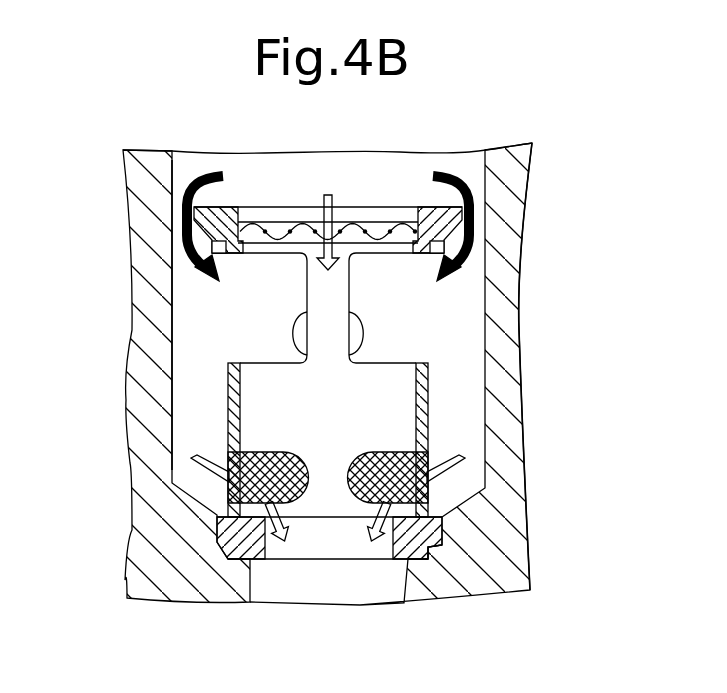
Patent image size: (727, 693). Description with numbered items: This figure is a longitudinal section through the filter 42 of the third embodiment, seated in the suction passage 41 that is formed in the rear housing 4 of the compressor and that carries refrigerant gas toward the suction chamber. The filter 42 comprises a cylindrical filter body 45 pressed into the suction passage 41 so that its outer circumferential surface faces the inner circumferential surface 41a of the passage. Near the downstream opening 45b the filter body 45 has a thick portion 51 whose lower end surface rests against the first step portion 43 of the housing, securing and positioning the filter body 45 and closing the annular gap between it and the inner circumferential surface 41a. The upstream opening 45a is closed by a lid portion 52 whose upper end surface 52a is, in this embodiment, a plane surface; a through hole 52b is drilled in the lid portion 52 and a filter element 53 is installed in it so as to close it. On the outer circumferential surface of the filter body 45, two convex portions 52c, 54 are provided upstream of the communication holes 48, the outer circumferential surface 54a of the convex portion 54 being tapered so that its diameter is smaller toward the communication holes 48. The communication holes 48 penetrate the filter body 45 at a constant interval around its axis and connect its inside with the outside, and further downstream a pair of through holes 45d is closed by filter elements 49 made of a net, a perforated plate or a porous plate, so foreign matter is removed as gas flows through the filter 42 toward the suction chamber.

The rear housing 4 is at (513, 319).
The suction passage 41 is at (473, 172).
The inner circumferential surface of the suction passage 41a is at (183, 287).
The filter 42 is at (222, 426).
The first step portion 43 is at (427, 549).
The filter body 45 is at (429, 416).
The opening 45a is at (407, 247).
The opening 45b is at (379, 542).
The through holes 45d is at (354, 452).
The communication holes 48 is at (350, 356).
The filter elements 49 is at (228, 456).
The thick portion 51 is at (430, 528).
The lid portion 52 is at (224, 207).
The upper end surface of the lid portion 52a is at (424, 206).
The through hole 52b is at (244, 222).
The convex portion 52c is at (448, 239).
The filter element 53 is at (310, 238).
The convex portion 54 is at (430, 206).
The outer circumferential surface of the convex portion 54a is at (243, 233).